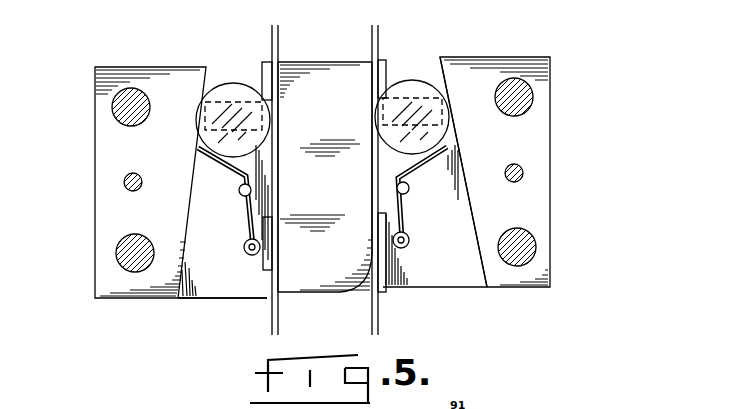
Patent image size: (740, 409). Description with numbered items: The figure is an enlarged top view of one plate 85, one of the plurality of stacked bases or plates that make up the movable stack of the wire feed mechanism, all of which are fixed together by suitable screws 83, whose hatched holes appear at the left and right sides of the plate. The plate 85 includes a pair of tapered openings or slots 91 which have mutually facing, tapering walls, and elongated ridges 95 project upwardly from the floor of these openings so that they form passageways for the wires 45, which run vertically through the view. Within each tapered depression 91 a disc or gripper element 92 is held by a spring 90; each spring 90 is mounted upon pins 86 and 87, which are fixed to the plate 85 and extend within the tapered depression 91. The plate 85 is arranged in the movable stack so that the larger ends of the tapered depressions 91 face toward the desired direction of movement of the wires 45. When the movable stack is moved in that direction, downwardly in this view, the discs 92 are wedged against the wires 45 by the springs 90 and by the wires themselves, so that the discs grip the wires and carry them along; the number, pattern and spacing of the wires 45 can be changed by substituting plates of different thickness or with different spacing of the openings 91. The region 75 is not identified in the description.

The wires 45 is at (365, 40).
The support plate 75 is at (163, 82).
The screws 83 is at (131, 107).
The plate 85 is at (558, 150).
The pin 86 is at (243, 194).
The pin 87 is at (252, 254).
The spring 90 is at (223, 160).
The tapered opening 91 is at (213, 287).
The gripper element 92 is at (236, 154).
The elongated ridge 95 is at (265, 62).